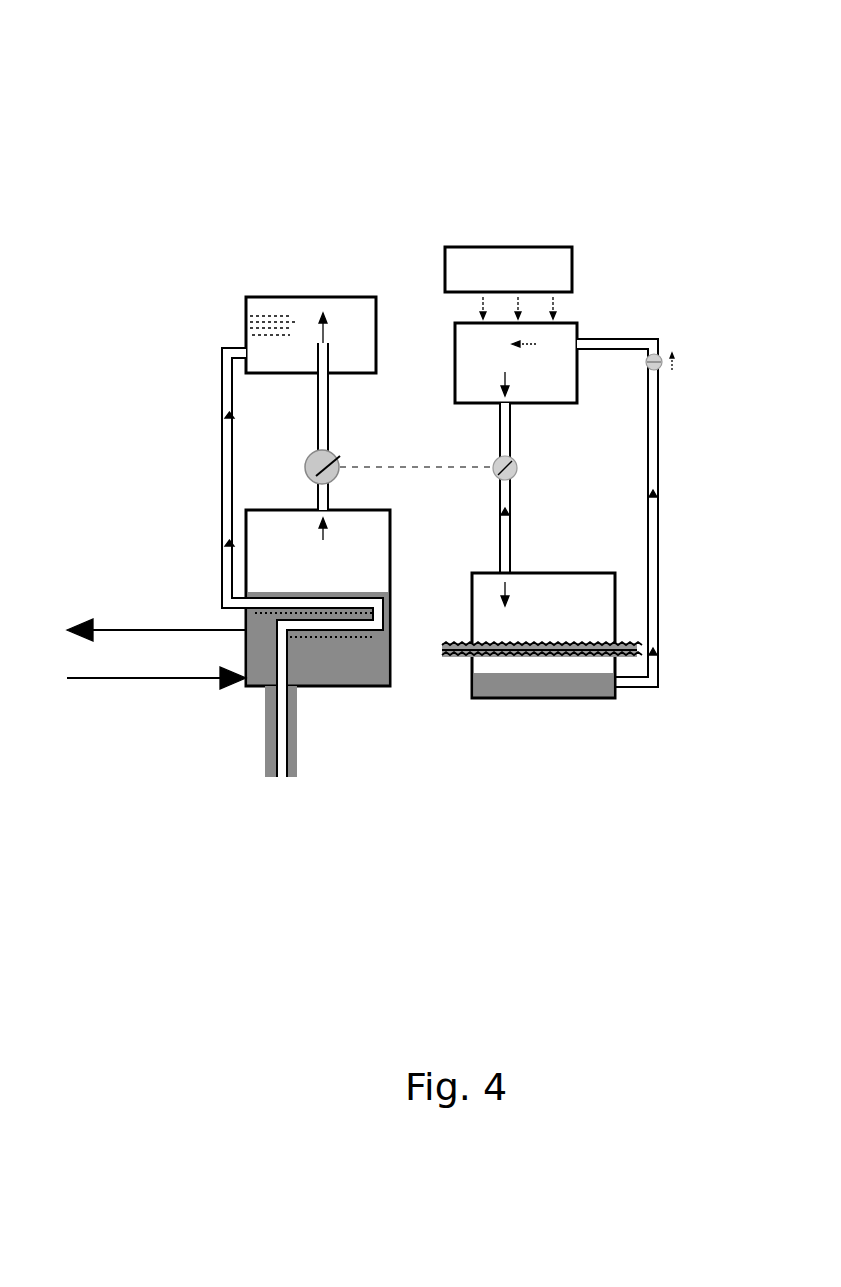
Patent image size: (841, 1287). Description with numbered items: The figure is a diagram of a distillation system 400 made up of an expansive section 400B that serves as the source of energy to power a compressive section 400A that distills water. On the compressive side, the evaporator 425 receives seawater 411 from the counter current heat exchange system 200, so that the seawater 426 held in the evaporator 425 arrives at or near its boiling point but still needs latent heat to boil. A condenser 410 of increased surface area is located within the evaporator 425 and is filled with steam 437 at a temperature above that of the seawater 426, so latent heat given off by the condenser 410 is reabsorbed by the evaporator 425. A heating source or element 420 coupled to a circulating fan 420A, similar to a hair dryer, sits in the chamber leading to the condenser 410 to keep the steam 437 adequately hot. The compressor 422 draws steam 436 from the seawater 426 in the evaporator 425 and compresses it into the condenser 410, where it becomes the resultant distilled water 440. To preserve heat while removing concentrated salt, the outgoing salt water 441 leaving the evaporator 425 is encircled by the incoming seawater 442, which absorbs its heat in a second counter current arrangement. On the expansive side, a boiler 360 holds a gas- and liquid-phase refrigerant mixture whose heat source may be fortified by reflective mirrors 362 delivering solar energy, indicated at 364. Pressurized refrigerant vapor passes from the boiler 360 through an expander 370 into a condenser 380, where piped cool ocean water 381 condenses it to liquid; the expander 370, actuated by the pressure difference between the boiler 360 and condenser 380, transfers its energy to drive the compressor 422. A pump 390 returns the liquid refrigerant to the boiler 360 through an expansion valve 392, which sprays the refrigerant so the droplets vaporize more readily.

The distillation system 400 is at (149, 105).
The compressive section 400A is at (272, 162).
The expansive section 400B is at (632, 175).
The steam 437 is at (356, 314).
The heating source or element 420 is at (250, 318).
The circulating fan 420A is at (254, 349).
The compressor 422 is at (400, 411).
The steam 436 is at (376, 534).
The condenser 410 is at (372, 594).
The evaporator 425 is at (235, 582).
The outgoing salt water 441 is at (156, 620).
The incoming seawater 442 is at (156, 670).
The seawater 426 is at (265, 662).
The distilled water 440 is at (295, 720).
The seawater 411 is at (250, 781).
The counter current heat exchange system 200 is at (284, 799).
The reflective mirrors 362 is at (508, 269).
The connection 364 is at (575, 308).
The expansion valve 392 is at (592, 337).
The boiler 360 is at (516, 363).
The pump 390 is at (628, 372).
The expander 370 is at (517, 455).
The condenser 380 is at (597, 622).
The piped cool ocean water 381 is at (629, 647).